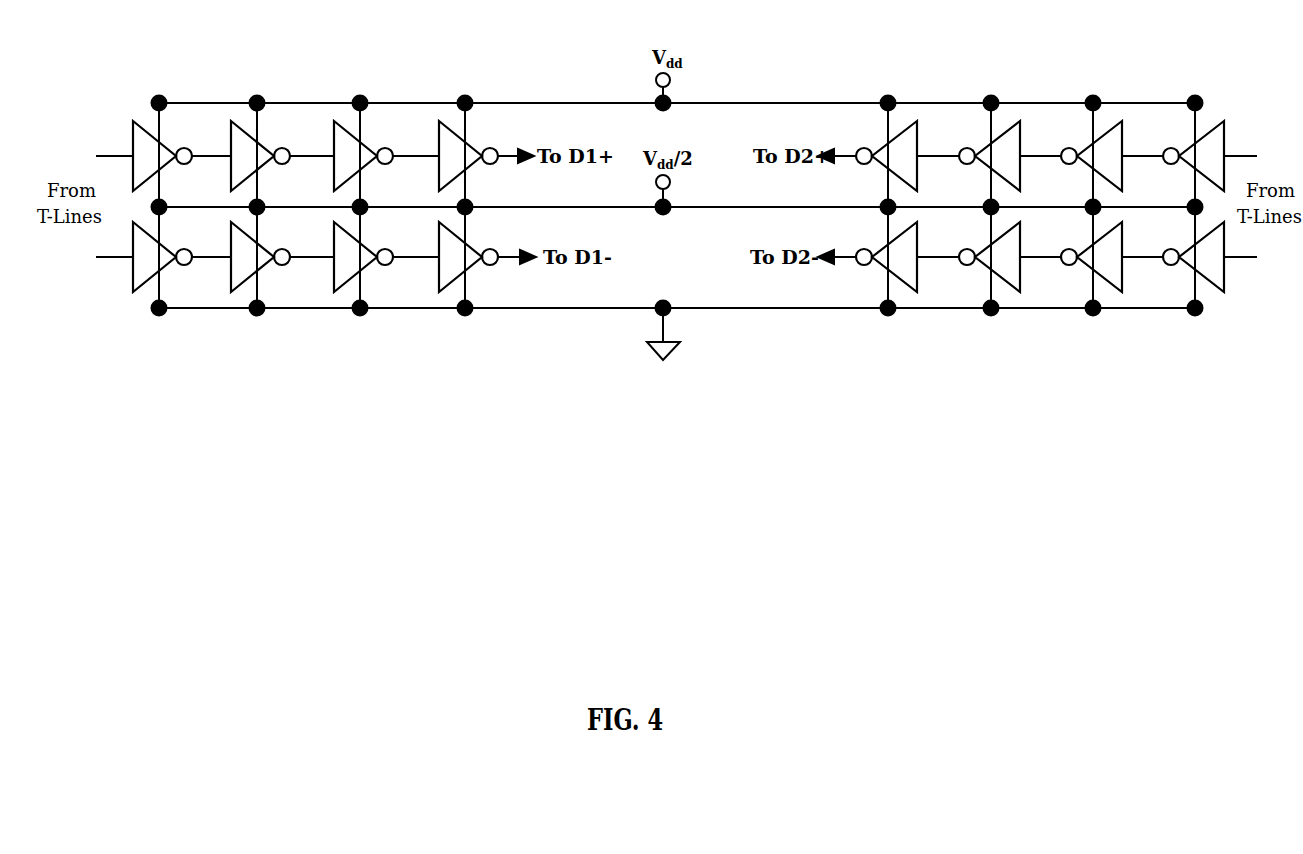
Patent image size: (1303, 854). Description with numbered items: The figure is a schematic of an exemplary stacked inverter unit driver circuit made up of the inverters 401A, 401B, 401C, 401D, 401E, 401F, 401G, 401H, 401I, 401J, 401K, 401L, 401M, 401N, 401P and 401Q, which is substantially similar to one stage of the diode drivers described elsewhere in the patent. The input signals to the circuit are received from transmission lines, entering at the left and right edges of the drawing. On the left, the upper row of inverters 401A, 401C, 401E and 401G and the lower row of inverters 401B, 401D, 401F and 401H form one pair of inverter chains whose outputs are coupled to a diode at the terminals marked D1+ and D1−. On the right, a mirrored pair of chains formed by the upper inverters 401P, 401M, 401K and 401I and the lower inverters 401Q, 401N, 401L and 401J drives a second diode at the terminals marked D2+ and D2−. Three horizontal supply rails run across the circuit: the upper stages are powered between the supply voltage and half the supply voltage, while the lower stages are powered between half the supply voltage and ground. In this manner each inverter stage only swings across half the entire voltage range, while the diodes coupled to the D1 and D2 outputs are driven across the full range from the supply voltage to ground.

The inverter 401A is at (137, 164).
The inverter 401B is at (137, 265).
The inverter 401C is at (235, 164).
The inverter 401D is at (235, 265).
The inverter 401E is at (338, 164).
The inverter 401F is at (338, 265).
The inverter 401G is at (441, 164).
The inverter 401H is at (441, 265).
The inverter 401I is at (880, 164).
The inverter 401J is at (880, 265).
The inverter 401K is at (978, 164).
The inverter 401L is at (978, 265).
The inverter 401M is at (1080, 164).
The inverter 401N is at (1080, 265).
The inverter 401P is at (1182, 164).
The inverter 401Q is at (1182, 265).